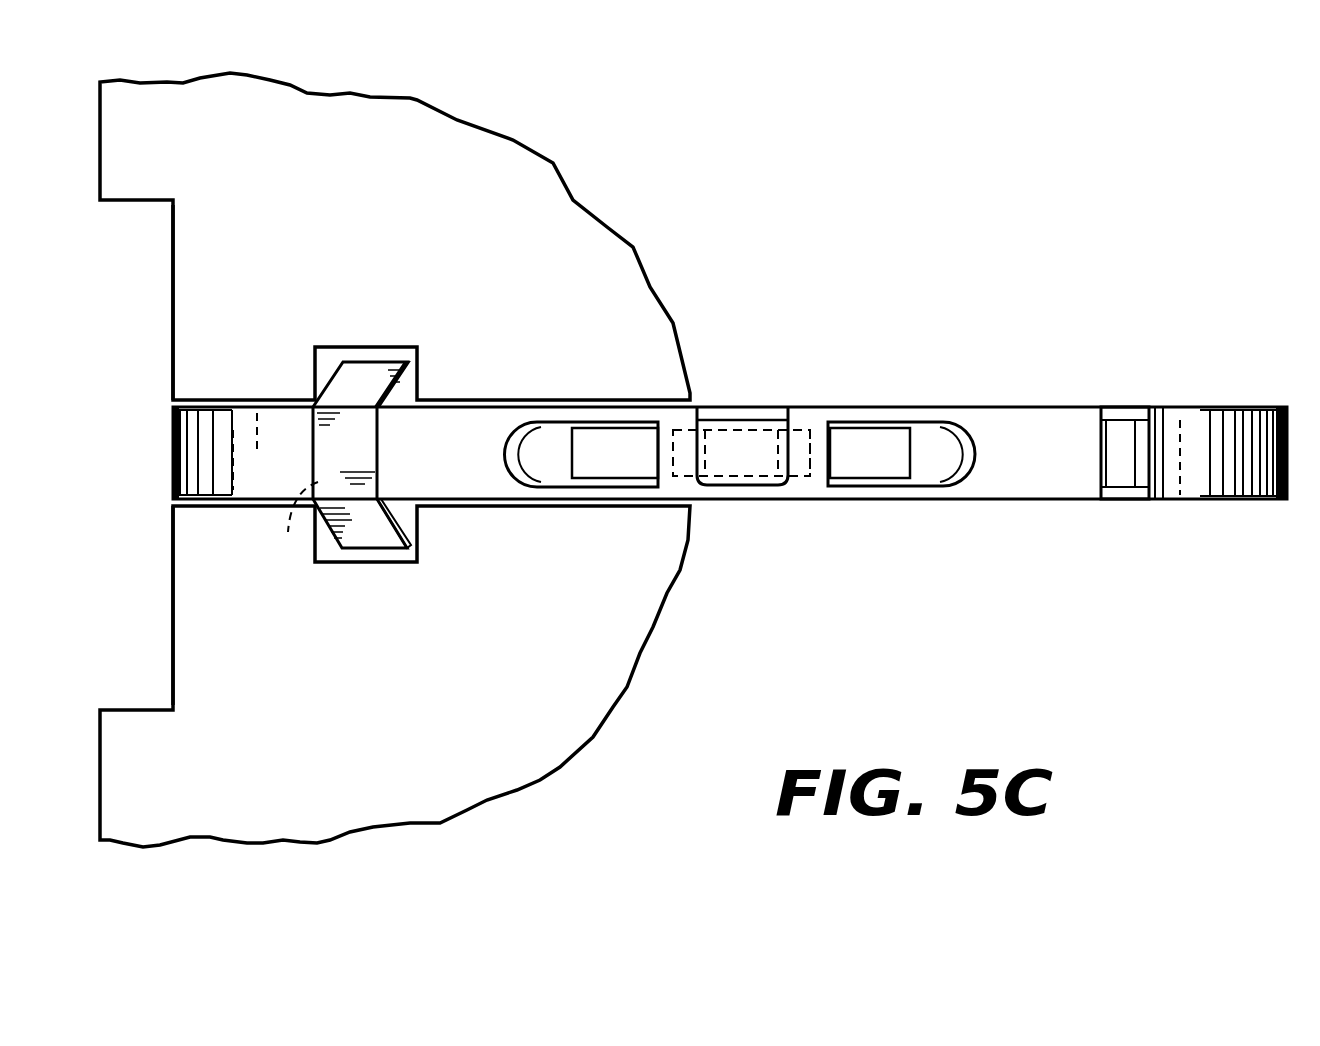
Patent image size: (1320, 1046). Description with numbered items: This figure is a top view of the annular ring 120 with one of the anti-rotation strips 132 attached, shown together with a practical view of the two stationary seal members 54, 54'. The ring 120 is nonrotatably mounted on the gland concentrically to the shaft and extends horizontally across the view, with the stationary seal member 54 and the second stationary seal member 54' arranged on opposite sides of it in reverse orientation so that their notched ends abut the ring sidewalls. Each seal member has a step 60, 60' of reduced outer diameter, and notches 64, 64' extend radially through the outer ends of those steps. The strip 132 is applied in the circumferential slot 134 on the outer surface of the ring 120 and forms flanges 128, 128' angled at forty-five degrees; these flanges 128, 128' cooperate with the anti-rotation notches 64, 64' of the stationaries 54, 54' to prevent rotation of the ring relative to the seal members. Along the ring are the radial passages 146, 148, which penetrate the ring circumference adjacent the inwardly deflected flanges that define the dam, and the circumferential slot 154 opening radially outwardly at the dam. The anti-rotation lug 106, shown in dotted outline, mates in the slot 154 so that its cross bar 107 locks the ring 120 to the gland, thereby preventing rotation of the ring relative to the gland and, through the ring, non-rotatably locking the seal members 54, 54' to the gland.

The stationary seal member 54 is at (395, 678).
The second stationary seal member 54' is at (395, 224).
The step 60 is at (141, 605).
The step 60' is at (144, 302).
The notch 64 is at (331, 544).
The notch 64' is at (359, 395).
The flange 128 is at (401, 552).
The flange 128' is at (406, 349).
The anti-rotation strip 132 is at (323, 440).
The circumferential slot 134 is at (285, 527).
The radial passage 146 is at (542, 448).
The radial passage 148 is at (937, 452).
The circumferential slot 154 is at (745, 425).
The lug 106 is at (742, 475).
The cross bar 107 is at (802, 470).
The annular ring 120 is at (1043, 514).